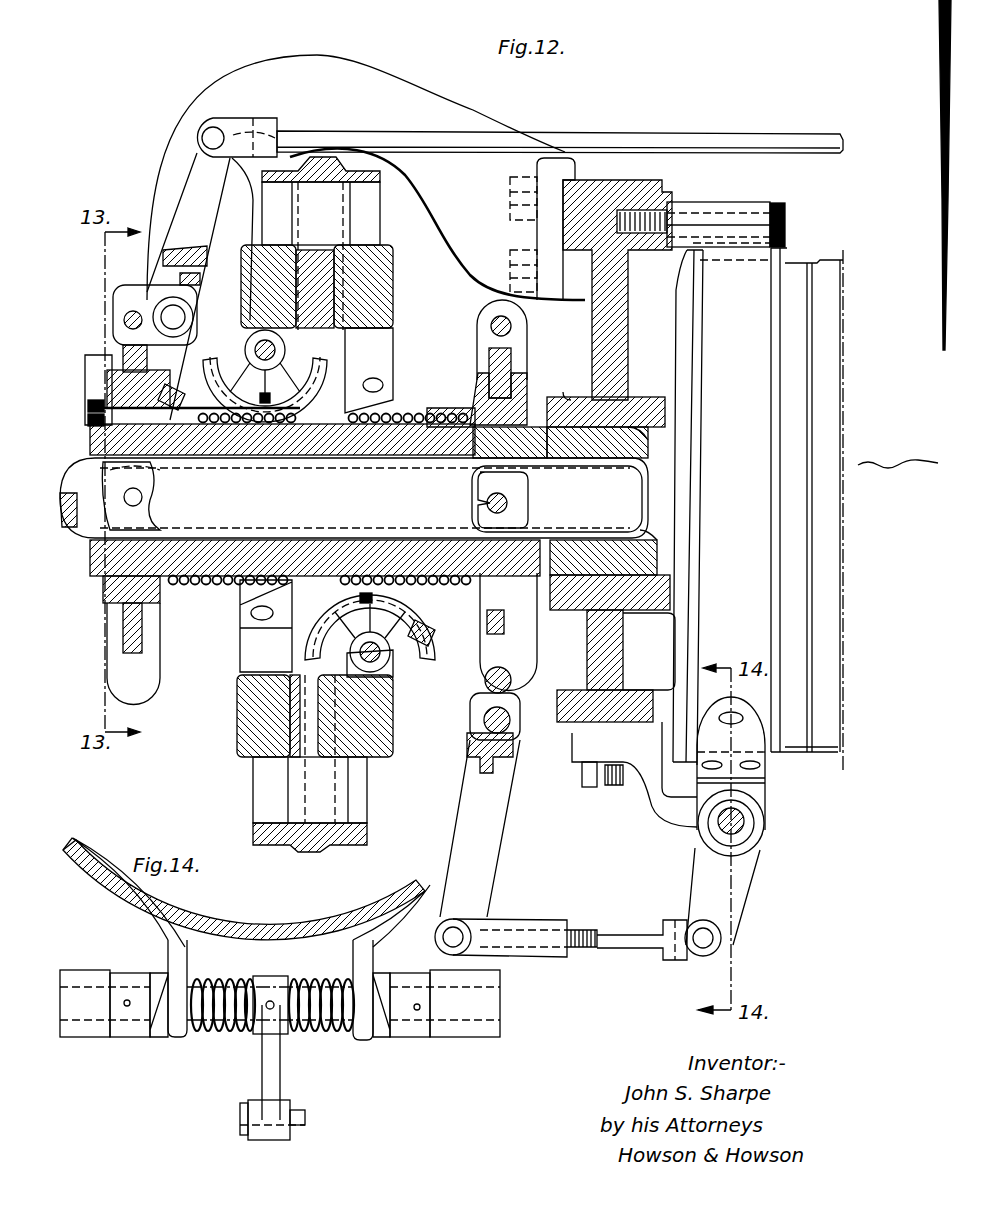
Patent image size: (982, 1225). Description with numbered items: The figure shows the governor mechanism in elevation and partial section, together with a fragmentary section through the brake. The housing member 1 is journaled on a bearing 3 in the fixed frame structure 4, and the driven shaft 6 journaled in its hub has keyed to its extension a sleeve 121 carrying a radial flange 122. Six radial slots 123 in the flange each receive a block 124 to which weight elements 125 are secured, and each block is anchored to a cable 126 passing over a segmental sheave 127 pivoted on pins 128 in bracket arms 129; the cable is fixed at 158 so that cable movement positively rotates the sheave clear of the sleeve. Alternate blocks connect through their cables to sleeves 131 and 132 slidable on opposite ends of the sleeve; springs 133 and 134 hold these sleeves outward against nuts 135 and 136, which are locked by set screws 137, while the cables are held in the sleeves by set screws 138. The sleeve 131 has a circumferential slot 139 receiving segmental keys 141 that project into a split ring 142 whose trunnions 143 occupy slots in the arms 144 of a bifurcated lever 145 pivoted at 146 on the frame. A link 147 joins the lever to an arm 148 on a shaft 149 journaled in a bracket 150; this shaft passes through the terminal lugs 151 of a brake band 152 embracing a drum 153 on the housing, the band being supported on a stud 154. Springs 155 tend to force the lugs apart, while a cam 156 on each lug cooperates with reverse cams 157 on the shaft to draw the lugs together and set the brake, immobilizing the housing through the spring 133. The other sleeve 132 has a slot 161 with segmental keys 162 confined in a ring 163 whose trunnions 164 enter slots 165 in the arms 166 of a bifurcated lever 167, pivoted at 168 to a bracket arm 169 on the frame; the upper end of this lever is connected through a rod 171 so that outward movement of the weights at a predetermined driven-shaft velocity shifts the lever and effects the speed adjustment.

In FIG. 12, the casing or housing member 1 is at (838, 504).
In FIG. 14, the casing or housing member 1 is at (257, 922).
In FIG. 12, the bearing 3 is at (643, 400).
In FIG. 12, the frame structure 4 is at (642, 182).
In FIG. 12, the driven shaft 6 is at (298, 511).
In FIG. 12, the sleeve 121 is at (443, 426).
In FIG. 12, the radial flange 122 is at (330, 155).
In FIG. 12, the radial slots 123 is at (335, 198).
In FIG. 12, the block 124 is at (340, 247).
In FIG. 12, the weight elements 125 is at (250, 248).
In FIG. 12, the cable 126 is at (343, 277).
In FIG. 12, the segmental sheave 127 is at (305, 352).
In FIG. 12, the pins 128 is at (258, 344).
In FIG. 12, the bracket arms 129 is at (390, 380).
In FIG. 12, the sleeve 131 is at (527, 383).
In FIG. 12, the sleeve 132 is at (110, 393).
In FIG. 12, the spring 133 is at (417, 414).
In FIG. 12, the spring 134 is at (222, 428).
In FIG. 12, the nut 135 is at (518, 394).
In FIG. 12, the nut 136 is at (100, 420).
In FIG. 12, the set screws 137 is at (100, 406).
In FIG. 12, the set screws 138 is at (190, 386).
In FIG. 12, the circumferential slot 139 is at (523, 368).
In FIG. 12, the segmental keys 141 is at (510, 353).
In FIG. 12, the split ring 142 is at (476, 333).
In FIG. 12, the trunnions 143 is at (505, 502).
In FIG. 12, the arms 144 is at (517, 517).
In FIG. 12, the bifurcated lever 145 is at (488, 818).
In FIG. 12, the pivot 146 is at (475, 720).
In FIG. 12, the link 147 is at (617, 940).
In FIG. 14, the link 147 is at (292, 1140).
In FIG. 12, the arm 148 is at (740, 903).
In FIG. 14, the arm 148 is at (280, 1075).
In FIG. 12, the shaft 149 is at (742, 833).
In FIG. 14, the shaft 149 is at (220, 1027).
In FIG. 12, the bracket 150 is at (657, 813).
In FIG. 14, the bracket 150 is at (98, 1013).
In FIG. 12, the terminal lugs 151 is at (760, 793).
In FIG. 14, the terminal lugs 151 is at (185, 958).
In FIG. 12, the brake band 152 is at (782, 450).
In FIG. 14, the brake band 152 is at (117, 900).
In FIG. 12, the drum 153 is at (786, 283).
In FIG. 12, the stud 154 is at (690, 205).
In FIG. 14, the springs 155 is at (293, 973).
In FIG. 14, the cam 156 is at (160, 973).
In FIG. 14, the reverse cams 157 is at (123, 1027).
In FIG. 12, the cable securing point 158 is at (262, 405).
In FIG. 12, the circumferential slot 161 is at (112, 378).
In FIG. 12, the segmental keys 162 is at (125, 345).
In FIG. 12, the ring 163 is at (128, 305).
In FIG. 12, the trunnions 164 is at (142, 497).
In FIG. 12, the slots 165 is at (150, 518).
In FIG. 12, the arms 166 is at (153, 483).
In FIG. 12, the bifurcated lever 167 is at (188, 187).
In FIG. 12, the pivot 168 is at (148, 283).
In FIG. 12, the bracket arm 169 is at (318, 58).
In FIG. 12, the rod 171 is at (593, 134).